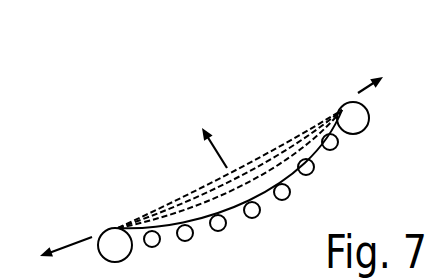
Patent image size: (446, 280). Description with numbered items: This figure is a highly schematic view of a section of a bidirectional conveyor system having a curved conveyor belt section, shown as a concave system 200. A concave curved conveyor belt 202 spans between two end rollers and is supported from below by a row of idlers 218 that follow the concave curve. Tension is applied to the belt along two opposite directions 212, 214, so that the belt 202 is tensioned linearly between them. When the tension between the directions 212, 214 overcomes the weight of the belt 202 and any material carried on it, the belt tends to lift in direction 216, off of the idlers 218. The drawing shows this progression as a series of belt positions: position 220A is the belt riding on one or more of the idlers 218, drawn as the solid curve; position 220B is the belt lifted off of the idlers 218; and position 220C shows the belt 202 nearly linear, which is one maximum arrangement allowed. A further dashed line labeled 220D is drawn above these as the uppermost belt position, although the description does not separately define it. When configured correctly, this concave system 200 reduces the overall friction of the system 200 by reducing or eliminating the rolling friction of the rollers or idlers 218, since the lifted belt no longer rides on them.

The concave system 200 is at (136, 167).
The conveyor belt 202 is at (200, 220).
The direction 212 is at (360, 84).
The direction 214 is at (62, 246).
The direction 216 is at (220, 151).
The idlers 218 is at (303, 178).
The position 220A is at (316, 162).
The position 220B is at (296, 150).
The position 220C is at (281, 152).
The fourth belt position 220D is at (267, 152).